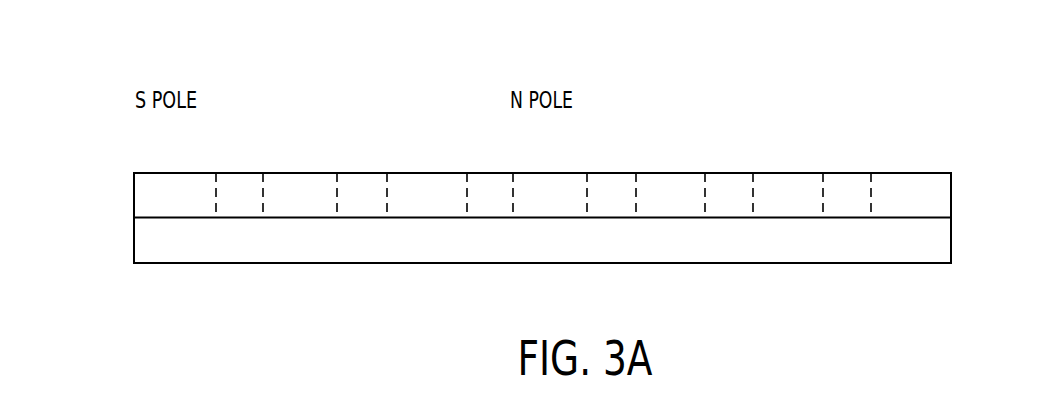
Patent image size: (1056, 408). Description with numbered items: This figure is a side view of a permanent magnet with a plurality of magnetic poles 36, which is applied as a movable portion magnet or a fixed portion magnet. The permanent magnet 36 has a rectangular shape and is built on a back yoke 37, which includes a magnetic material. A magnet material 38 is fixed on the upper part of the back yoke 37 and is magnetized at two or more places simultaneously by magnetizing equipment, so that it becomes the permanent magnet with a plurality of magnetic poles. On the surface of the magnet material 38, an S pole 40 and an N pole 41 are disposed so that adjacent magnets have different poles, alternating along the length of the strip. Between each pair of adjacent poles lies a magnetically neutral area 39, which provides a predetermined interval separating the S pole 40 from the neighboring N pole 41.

The permanent magnet with a plurality of magnetic poles 36 is at (500, 92).
The back yoke 37 is at (285, 248).
The magnet material 38 is at (951, 192).
The magnetically neutral area 39 is at (251, 187).
The S pole 40 is at (180, 187).
The N pole 41 is at (302, 187).